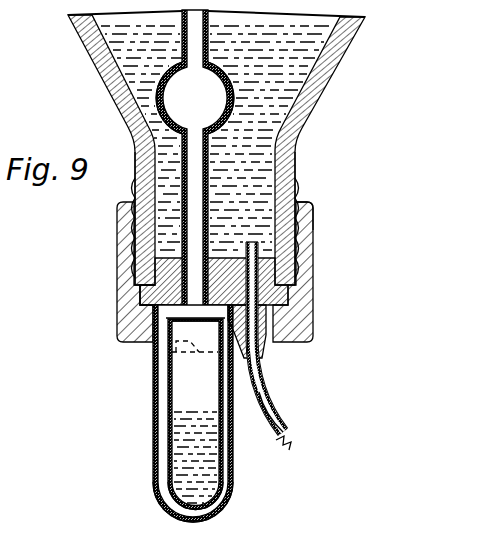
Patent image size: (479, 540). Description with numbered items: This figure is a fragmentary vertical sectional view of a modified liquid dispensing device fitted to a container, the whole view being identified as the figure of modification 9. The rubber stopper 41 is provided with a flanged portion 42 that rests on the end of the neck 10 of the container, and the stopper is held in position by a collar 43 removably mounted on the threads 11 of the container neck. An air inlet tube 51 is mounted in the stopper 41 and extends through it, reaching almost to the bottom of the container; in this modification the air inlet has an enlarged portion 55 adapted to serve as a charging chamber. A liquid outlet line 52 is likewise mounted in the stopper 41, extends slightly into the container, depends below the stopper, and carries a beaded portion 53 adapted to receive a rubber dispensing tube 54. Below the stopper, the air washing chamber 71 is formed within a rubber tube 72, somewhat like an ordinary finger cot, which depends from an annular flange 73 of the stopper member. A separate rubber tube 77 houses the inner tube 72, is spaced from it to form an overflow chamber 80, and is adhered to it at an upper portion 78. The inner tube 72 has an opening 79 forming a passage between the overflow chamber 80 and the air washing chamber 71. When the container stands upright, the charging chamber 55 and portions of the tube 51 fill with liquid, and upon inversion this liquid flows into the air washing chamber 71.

The funnel 9 is at (334, 78).
The neck 10 is at (286, 165).
The threads 11 is at (300, 214).
The rubber stopper 41 is at (128, 270).
The flanged portion 42 is at (140, 289).
The collar 43 is at (303, 272).
The air inlet tube 51 is at (180, 148).
The liquid outlet line 52 is at (260, 250).
The beaded portion 53 is at (265, 350).
The rubber dispensing tube 54 is at (280, 415).
The enlarged portion 55 is at (137, 92).
The air washing chamber 71 is at (171, 440).
The rubber tube 72 is at (175, 393).
The annular flange 73 is at (156, 313).
The separate rubber tube 77 is at (160, 478).
The upper portion 78 is at (157, 348).
The opening 79 is at (228, 510).
The overflow chamber 80 is at (153, 507).